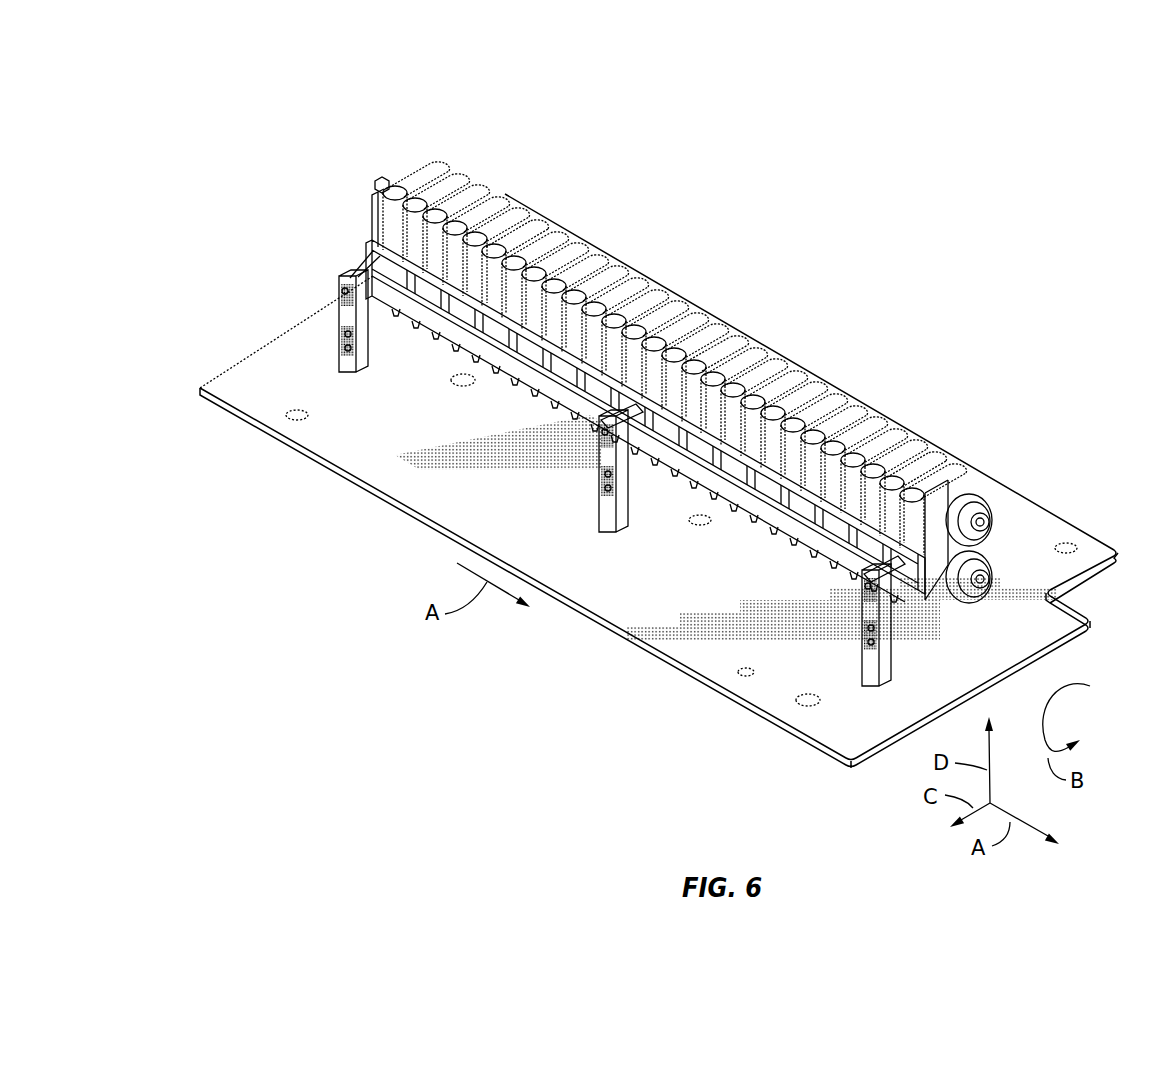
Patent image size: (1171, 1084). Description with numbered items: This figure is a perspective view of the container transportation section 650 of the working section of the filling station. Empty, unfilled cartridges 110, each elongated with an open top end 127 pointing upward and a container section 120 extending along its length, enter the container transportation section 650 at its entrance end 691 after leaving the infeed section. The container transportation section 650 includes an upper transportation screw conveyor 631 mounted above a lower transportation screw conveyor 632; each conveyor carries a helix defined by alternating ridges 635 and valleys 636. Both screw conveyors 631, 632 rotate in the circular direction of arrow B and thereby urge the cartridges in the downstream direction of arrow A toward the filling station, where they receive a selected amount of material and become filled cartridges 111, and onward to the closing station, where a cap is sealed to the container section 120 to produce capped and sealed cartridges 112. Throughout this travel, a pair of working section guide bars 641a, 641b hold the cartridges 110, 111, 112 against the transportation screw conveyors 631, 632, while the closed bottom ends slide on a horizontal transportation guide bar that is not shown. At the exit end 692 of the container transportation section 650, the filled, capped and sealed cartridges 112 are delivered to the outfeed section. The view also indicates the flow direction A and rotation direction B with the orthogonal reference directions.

The entrance end 691 is at (602, 327).
The exit end 692 is at (1016, 460).
The container section 120 is at (411, 200).
The open top end 127 is at (379, 195).
The unfilled cartridge 110 is at (388, 215).
The filled cartridge 111 is at (690, 400).
The capped and sealed cartridge 112 is at (908, 520).
The ridges 635 is at (560, 245).
The valleys 636 is at (613, 295).
The container transportation section 650 is at (682, 330).
The upper transportation screw conveyor 631 is at (990, 530).
The lower transportation screw conveyor 632 is at (987, 583).
The working section guide bar 641a is at (590, 376).
The working section guide bar 641b is at (800, 492).